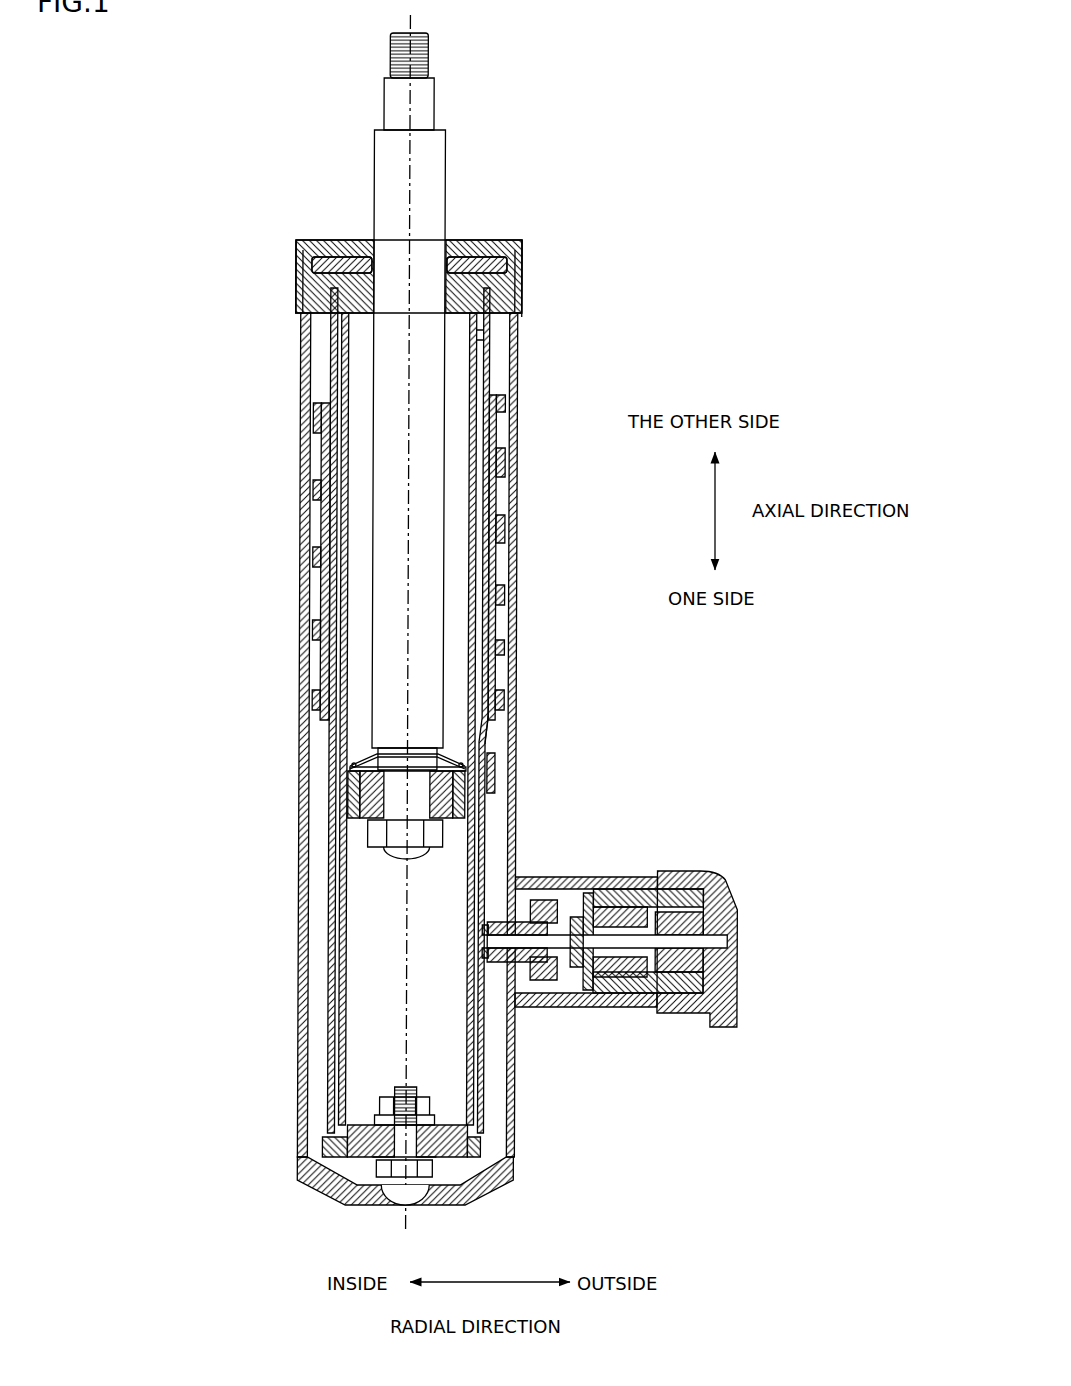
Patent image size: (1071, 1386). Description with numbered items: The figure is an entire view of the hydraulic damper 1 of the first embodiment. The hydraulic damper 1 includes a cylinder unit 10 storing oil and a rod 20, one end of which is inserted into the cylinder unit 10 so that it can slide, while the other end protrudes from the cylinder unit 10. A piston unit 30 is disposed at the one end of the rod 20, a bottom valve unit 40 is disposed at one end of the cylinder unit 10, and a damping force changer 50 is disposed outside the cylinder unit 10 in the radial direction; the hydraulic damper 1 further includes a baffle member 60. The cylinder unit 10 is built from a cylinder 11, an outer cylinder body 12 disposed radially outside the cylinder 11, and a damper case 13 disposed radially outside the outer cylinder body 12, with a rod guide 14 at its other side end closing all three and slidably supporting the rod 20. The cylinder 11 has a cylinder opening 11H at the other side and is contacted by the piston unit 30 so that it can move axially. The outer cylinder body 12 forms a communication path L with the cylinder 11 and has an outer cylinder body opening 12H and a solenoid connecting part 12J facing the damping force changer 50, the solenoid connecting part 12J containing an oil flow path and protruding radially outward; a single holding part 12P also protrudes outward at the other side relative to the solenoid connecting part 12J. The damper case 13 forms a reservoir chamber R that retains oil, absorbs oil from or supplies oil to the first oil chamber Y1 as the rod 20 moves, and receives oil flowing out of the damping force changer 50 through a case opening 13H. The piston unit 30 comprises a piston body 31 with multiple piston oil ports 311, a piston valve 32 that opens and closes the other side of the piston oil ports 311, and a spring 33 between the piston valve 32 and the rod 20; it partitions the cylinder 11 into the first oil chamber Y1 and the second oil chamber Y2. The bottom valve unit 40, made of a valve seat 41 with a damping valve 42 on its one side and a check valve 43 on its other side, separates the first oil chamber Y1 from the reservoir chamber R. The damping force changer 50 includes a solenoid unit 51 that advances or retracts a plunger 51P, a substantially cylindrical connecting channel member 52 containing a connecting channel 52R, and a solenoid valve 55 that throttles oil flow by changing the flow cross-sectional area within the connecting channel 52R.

The hydraulic damper 1 is at (222, 160).
The cylinder unit 10 is at (521, 326).
The cylinder 11 is at (478, 505).
The cylinder opening 11H is at (490, 337).
The outer cylinder body 12 is at (512, 582).
The outer cylinder body opening 12H is at (497, 955).
The solenoid connecting part 12J is at (490, 965).
The holding part 12P is at (505, 736).
The damper case 13 is at (505, 480).
The case opening 13H is at (523, 877).
The rod guide 14 is at (330, 290).
The rod 20 is at (450, 150).
The piston unit 30 is at (333, 758).
The piston body 31 is at (345, 793).
The piston oil ports 311 is at (360, 805).
The piston valve 32 is at (350, 770).
The spring 33 is at (348, 758).
The bottom valve unit 40 is at (404, 1102).
The valve seat 41 is at (475, 1138).
The damping valve 42 is at (470, 1160).
The check valve 43 is at (350, 1125).
The damping force changer 50 is at (644, 919).
The solenoid unit 51 is at (675, 903).
The plunger 51P is at (640, 945).
The connecting channel member 52 is at (558, 878).
The connecting channel 52R is at (565, 950).
The solenoid valve 55 is at (600, 878).
The baffle member 60 is at (313, 403).
The communication path L is at (483, 445).
The reservoir chamber R is at (507, 768).
The first oil chamber Y1 is at (460, 926).
The second oil chamber Y2 is at (355, 470).